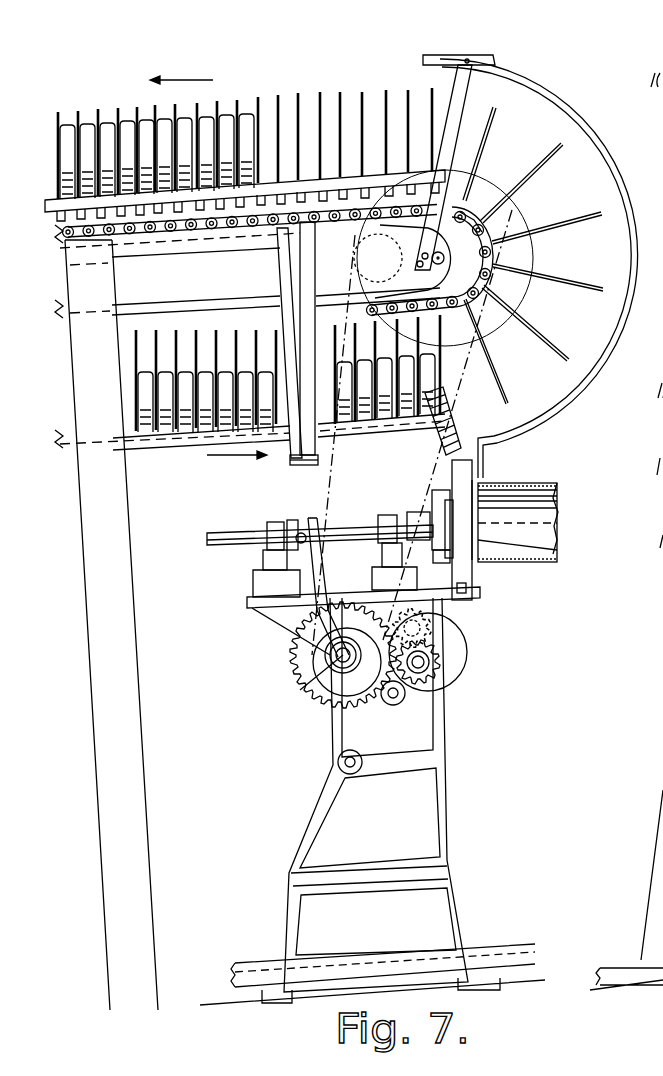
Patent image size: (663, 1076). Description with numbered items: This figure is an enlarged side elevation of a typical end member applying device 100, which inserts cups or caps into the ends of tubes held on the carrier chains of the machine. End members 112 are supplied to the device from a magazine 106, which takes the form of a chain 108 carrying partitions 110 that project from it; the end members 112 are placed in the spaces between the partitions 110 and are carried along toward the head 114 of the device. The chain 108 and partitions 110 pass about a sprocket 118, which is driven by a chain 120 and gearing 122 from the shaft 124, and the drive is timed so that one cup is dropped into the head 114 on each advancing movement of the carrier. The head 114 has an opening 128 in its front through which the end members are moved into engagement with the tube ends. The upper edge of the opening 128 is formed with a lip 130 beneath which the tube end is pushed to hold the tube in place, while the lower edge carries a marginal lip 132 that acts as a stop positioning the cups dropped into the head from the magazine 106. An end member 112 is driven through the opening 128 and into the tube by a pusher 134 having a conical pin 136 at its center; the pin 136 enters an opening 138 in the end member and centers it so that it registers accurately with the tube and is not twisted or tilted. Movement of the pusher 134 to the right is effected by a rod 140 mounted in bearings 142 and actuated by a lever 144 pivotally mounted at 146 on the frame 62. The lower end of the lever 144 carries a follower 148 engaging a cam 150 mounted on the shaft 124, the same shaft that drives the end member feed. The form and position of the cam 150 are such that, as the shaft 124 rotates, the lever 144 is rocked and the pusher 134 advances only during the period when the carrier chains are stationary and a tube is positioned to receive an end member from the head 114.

The frame 62 is at (425, 742).
The end member applying device 100 is at (522, 62).
The magazine 106 is at (310, 98).
The chain 108 is at (208, 238).
The partitions 110 is at (565, 358).
The end members 112 is at (112, 128).
The head 114 is at (452, 465).
The sprocket 118 is at (474, 220).
The chain 120 is at (318, 468).
The gearing 122 is at (305, 660).
The shaft 124 is at (425, 660).
The opening 128 is at (513, 550).
The lip 130 is at (478, 477).
The marginal lip 132 is at (468, 575).
The pusher 134 is at (432, 494).
The conical pin 136 is at (470, 537).
The opening 138 is at (555, 519).
The rod 140 is at (248, 540).
The bearings 142 is at (270, 520).
The lever 144 is at (324, 556).
The pivot 146 is at (300, 690).
The follower 148 is at (405, 695).
The cam 150 is at (460, 660).